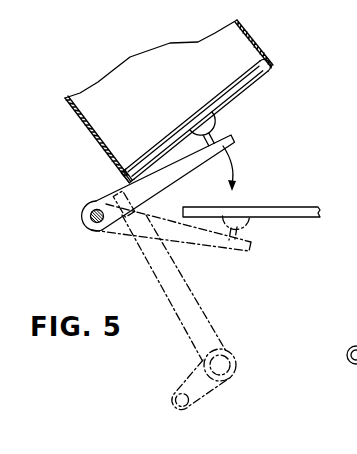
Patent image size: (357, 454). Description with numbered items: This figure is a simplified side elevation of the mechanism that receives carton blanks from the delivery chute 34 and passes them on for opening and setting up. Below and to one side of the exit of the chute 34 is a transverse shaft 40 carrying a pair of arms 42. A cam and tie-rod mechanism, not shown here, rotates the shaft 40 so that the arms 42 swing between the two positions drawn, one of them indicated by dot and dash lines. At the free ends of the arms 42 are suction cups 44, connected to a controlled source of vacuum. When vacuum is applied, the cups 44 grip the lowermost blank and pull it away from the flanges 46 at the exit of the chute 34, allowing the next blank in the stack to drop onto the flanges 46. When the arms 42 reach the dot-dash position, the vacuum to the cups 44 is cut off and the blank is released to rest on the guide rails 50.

The delivery chute 34 is at (80, 125).
The transverse shaft 40 is at (83, 220).
The arms 42 is at (103, 192).
The suction cups 44 is at (213, 121).
The flanges 46 is at (143, 169).
The guide rails 50 is at (290, 213).